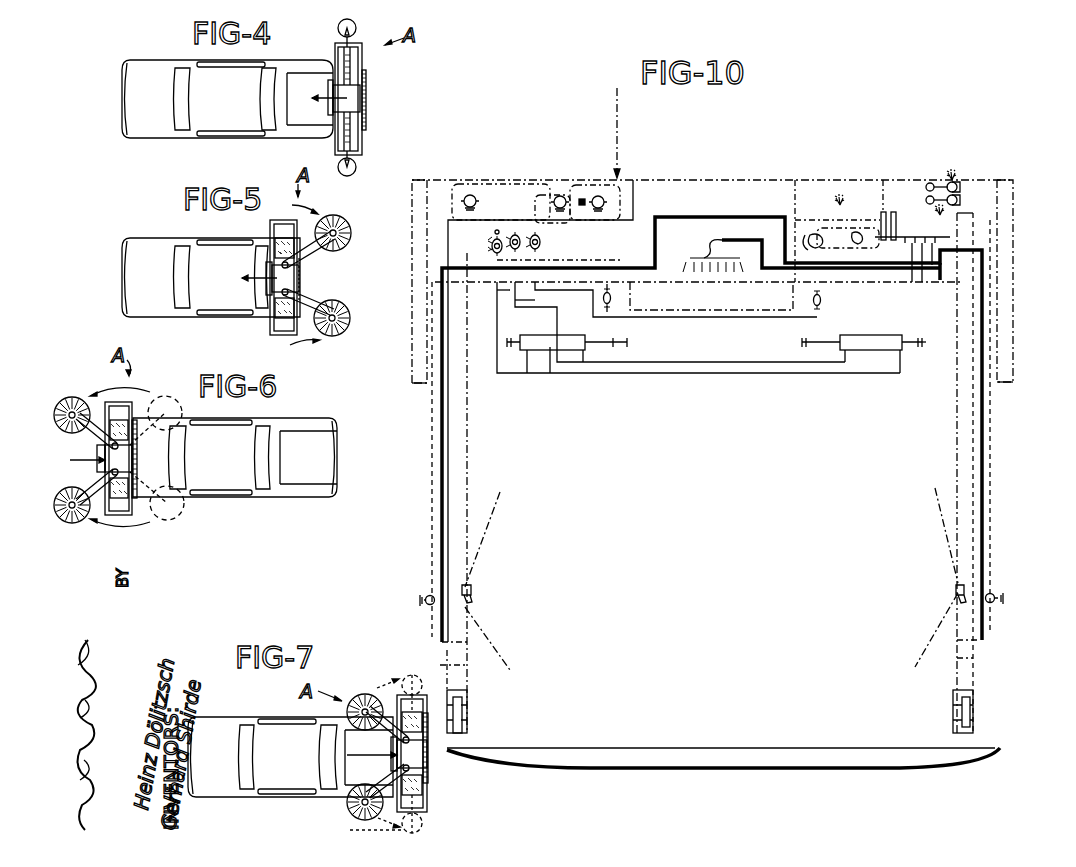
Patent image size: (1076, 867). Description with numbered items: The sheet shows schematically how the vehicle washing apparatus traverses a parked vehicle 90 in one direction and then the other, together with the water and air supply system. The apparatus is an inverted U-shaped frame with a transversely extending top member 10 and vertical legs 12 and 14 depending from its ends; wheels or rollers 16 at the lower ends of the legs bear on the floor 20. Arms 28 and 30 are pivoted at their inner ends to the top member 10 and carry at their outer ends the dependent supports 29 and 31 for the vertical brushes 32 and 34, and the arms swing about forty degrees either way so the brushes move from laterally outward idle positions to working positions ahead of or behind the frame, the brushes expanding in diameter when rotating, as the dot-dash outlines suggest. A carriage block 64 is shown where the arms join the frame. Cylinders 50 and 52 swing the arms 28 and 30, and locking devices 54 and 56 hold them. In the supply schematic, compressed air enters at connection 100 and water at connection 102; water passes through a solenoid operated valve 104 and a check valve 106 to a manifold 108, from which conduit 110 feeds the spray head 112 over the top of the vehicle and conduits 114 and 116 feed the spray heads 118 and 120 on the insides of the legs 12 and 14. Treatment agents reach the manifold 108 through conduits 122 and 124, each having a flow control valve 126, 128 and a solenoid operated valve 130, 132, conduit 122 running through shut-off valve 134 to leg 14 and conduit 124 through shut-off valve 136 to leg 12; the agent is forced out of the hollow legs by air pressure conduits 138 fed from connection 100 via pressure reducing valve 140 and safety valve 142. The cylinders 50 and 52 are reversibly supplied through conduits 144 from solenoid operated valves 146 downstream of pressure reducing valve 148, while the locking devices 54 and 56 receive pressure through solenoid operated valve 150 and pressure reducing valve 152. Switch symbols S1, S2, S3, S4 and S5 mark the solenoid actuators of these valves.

In FIG. 4, the top member 10 is at (336, 46).
In FIG. 5, the top member 10 is at (270, 228).
In FIG. 10, the vertical leg 12 is at (468, 481).
In FIG. 10, the vertical leg 14 is at (976, 652).
In FIG. 10, the wheels or rollers 16 is at (463, 745).
In FIG. 10, the floor 20 is at (658, 747).
In FIG. 4, the arm 28 is at (352, 56).
In FIG. 6, the arm 28 is at (105, 432).
In FIG. 10, the arm 28 is at (437, 185).
In FIG. 10, the dependent support 29 is at (412, 343).
In FIG. 4, the arm 30 is at (352, 128).
In FIG. 6, the arm 30 is at (102, 482).
In FIG. 10, the arm 30 is at (1000, 185).
In FIG. 10, the dependent support 31 is at (1005, 340).
In FIG. 4, the vertical brush 32 is at (355, 28).
In FIG. 5, the vertical brush 32 is at (343, 222).
In FIG. 6, the vertical brush 32 is at (82, 382).
In FIG. 7, the vertical brush 32 is at (383, 686).
In FIG. 4, the vertical brush 34 is at (355, 170).
In FIG. 5, the vertical brush 34 is at (331, 336).
In FIG. 6, the vertical brush 34 is at (70, 523).
In FIG. 7, the vertical brush 34 is at (365, 820).
In FIG. 10, the cylinder 50 is at (552, 352).
In FIG. 10, the cylinder 52 is at (868, 350).
In FIG. 10, the locking device 54 is at (613, 299).
In FIG. 10, the locking device 56 is at (517, 283).
In FIG. 4, the carriage block 64 is at (366, 82).
In FIG. 5, the carriage block 64 is at (270, 320).
In FIG. 7, the carriage block 64 is at (430, 790).
In FIG. 4, the vehicle 90 is at (133, 115).
In FIG. 5, the vehicle 90 is at (130, 297).
In FIG. 6, the vehicle 90 is at (226, 480).
In FIG. 7, the vehicle 90 is at (278, 780).
In FIG. 10, the compressed air connection 100 is at (620, 120).
In FIG. 10, the water connection 102 is at (808, 250).
In FIG. 10, the solenoid operated valve 104 is at (815, 238).
In FIG. 10, the check valve 106 is at (855, 235).
In FIG. 10, the manifold 108 is at (922, 268).
In FIG. 10, the conduit 110 is at (877, 265).
In FIG. 10, the spray head 112 is at (698, 255).
In FIG. 10, the conduit 114 is at (941, 342).
In FIG. 10, the conduit 116 is at (960, 265).
In FIG. 10, the spray head 118 is at (471, 590).
In FIG. 10, the spray head 120 is at (956, 590).
In FIG. 10, the conduit 122 is at (883, 210).
In FIG. 10, the conduit 124 is at (894, 212).
In FIG. 10, the flow control valve 126 is at (931, 196).
In FIG. 10, the flow control valve 128 is at (930, 183).
In FIG. 10, the solenoid operated valve 130 is at (958, 187).
In FIG. 10, the solenoid operated valve 132 is at (962, 200).
In FIG. 10, the shut-off valve 134 is at (995, 594).
In FIG. 10, the shut-off valve 136 is at (426, 603).
In FIG. 10, the air pressure conduits 138 is at (586, 290).
In FIG. 10, the pressure reducing valve 140 is at (598, 196).
In FIG. 10, the safety valve 142 is at (584, 199).
In FIG. 10, the conduits 144 is at (523, 305).
In FIG. 10, the solenoid operated valves 146 is at (515, 235).
In FIG. 10, the pressure reducing valve 148 is at (461, 203).
In FIG. 10, the solenoid operated valve 150 is at (537, 235).
In FIG. 10, the pressure reducing valve 152 is at (560, 195).
In FIG. 10, the switch S1 is at (950, 212).
In FIG. 10, the switch S2 is at (956, 178).
In FIG. 10, the switch S3 is at (822, 232).
In FIG. 10, the switch S4 is at (488, 245).
In FIG. 10, the switch S5 is at (497, 230).